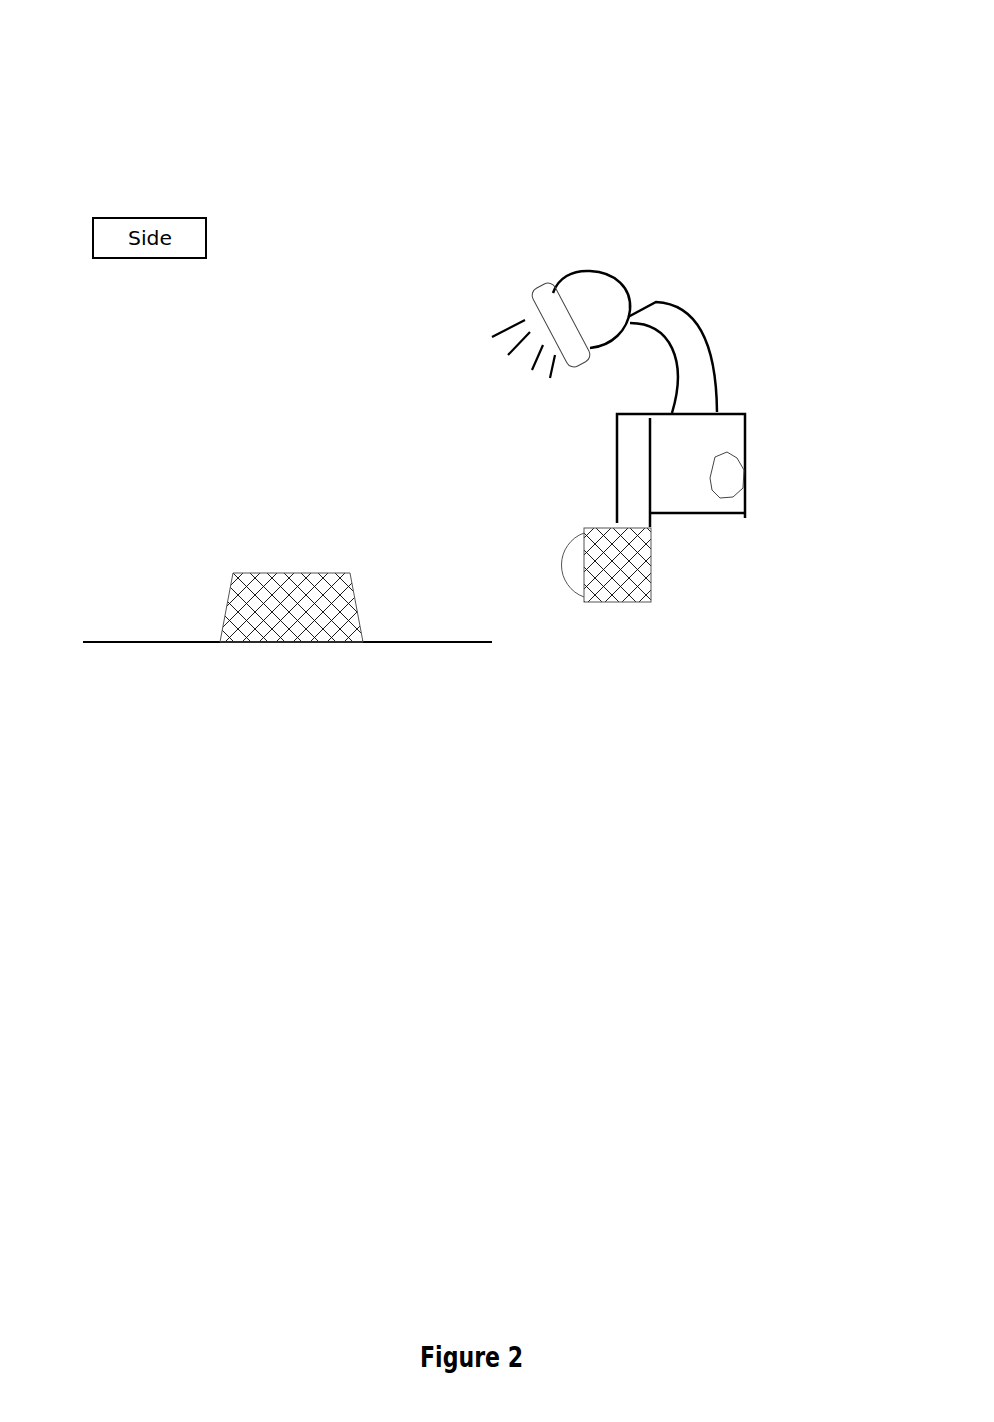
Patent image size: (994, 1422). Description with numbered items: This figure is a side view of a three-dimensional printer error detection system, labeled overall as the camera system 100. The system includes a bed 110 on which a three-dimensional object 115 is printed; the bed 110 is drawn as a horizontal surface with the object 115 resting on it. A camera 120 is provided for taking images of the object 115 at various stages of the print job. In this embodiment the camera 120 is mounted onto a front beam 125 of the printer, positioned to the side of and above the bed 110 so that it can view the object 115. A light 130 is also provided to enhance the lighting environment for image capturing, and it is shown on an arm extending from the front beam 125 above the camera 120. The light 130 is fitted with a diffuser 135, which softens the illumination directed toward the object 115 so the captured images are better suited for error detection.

The camera system 100 is at (477, 59).
The bed 110 is at (103, 635).
The 3D object 115 is at (295, 558).
The camera 120 is at (558, 552).
The front beam 125 is at (748, 479).
The light 130 is at (648, 293).
The diffuser 135 is at (528, 289).